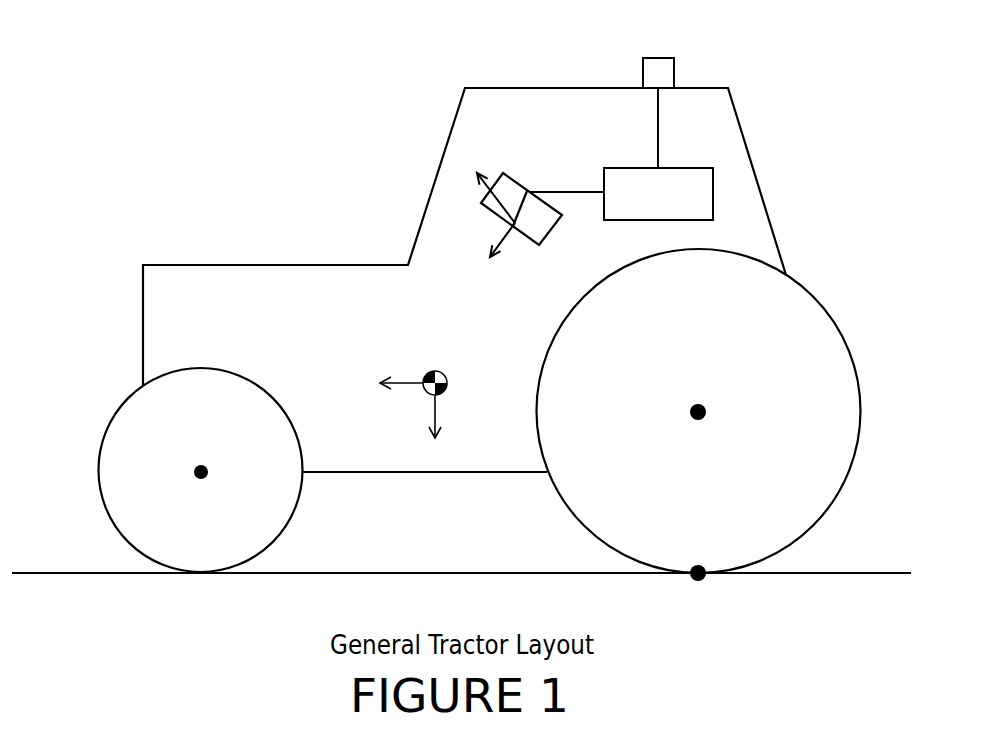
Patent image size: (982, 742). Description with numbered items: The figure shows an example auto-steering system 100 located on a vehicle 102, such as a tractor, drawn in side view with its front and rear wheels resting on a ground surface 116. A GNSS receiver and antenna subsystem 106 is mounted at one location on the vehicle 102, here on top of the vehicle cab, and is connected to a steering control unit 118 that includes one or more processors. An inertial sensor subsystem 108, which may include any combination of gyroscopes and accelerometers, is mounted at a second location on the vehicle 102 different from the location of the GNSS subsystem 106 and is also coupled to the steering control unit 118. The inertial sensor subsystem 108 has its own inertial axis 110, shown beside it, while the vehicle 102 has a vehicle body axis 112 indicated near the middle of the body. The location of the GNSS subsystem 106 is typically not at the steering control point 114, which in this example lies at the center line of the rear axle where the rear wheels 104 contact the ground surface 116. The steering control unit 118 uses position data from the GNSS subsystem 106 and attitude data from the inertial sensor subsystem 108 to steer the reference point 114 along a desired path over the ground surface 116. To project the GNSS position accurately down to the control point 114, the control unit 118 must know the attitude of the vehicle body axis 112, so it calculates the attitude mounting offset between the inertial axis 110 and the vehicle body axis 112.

The auto-steering system 100 is at (315, 128).
The vehicle 102 is at (143, 328).
The rear wheels 104 is at (845, 342).
The GNSS receiver and antenna subsystem 106 is at (643, 72).
The inertial sensor subsystem 108 is at (524, 188).
The inertial axis 110 is at (508, 231).
The vehicle body axis 112 is at (403, 383).
The steering control point 114 is at (700, 565).
The ground surface 116 is at (866, 572).
The steering control unit 118 is at (676, 208).